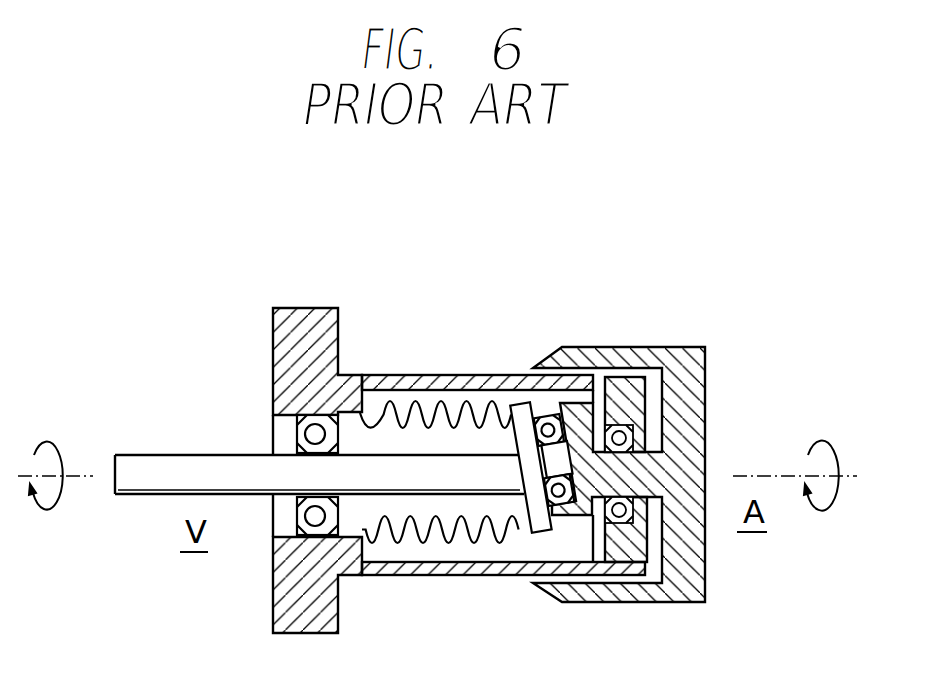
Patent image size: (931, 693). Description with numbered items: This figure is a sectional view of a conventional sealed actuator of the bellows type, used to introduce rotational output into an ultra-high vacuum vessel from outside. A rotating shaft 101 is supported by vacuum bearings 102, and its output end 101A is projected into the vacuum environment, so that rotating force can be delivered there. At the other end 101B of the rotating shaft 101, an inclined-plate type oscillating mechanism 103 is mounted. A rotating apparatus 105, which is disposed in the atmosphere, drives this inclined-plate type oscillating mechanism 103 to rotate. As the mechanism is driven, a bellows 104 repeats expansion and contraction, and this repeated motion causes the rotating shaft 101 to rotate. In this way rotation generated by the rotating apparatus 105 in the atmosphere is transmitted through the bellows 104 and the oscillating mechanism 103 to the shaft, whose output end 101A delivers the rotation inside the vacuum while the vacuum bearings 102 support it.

The rotating shaft 101 is at (214, 448).
The output end 101A is at (133, 483).
The other end 101B is at (456, 495).
The vacuum bearings 102 is at (275, 525).
The inclined-plate type oscillating mechanism 103 is at (538, 532).
The bellows 104 is at (455, 408).
The rotating apparatus 105 is at (705, 580).